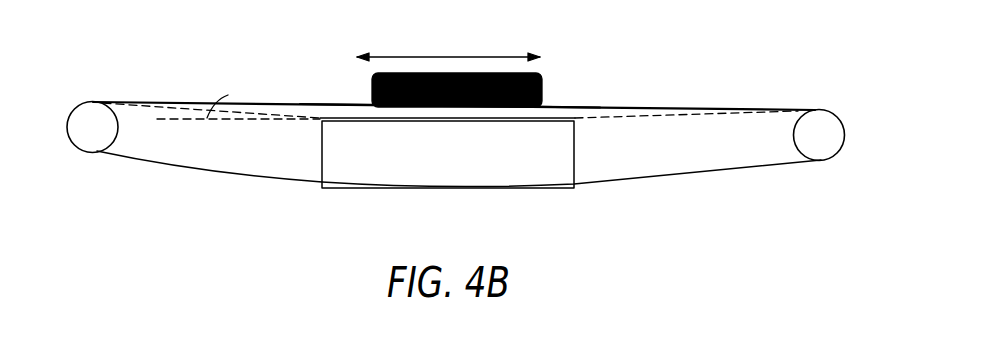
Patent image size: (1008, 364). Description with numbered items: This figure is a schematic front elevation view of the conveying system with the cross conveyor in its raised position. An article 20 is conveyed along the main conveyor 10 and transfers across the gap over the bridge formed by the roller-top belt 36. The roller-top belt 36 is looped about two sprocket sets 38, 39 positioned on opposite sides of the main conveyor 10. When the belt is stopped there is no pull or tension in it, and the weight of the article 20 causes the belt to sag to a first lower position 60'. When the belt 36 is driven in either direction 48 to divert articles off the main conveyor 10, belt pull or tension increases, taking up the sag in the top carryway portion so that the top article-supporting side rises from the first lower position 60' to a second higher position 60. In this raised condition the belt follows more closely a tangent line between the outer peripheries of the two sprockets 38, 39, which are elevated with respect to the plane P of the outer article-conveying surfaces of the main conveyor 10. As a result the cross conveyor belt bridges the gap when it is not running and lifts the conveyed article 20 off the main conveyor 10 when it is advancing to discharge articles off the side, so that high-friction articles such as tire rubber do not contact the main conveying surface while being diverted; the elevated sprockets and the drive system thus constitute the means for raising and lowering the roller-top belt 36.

The main conveyor 10 is at (575, 148).
The article 20 is at (543, 84).
The roller-top belt 36 is at (707, 108).
The sprocket set 38 is at (845, 134).
The sprocket set 39 is at (83, 108).
The direction 48 is at (452, 56).
The second higher position 60 is at (505, 88).
The first lower position 60' is at (450, 102).
The plane P is at (233, 90).